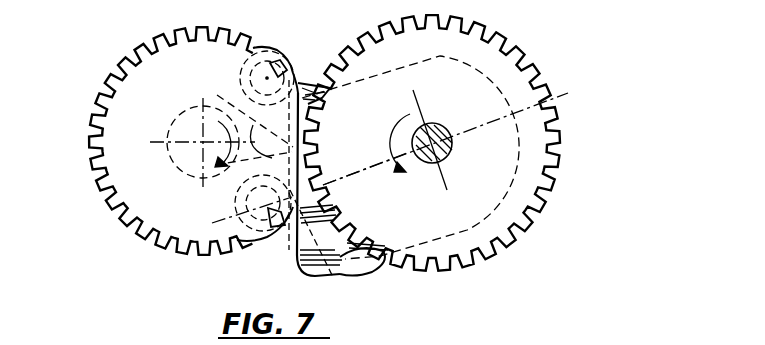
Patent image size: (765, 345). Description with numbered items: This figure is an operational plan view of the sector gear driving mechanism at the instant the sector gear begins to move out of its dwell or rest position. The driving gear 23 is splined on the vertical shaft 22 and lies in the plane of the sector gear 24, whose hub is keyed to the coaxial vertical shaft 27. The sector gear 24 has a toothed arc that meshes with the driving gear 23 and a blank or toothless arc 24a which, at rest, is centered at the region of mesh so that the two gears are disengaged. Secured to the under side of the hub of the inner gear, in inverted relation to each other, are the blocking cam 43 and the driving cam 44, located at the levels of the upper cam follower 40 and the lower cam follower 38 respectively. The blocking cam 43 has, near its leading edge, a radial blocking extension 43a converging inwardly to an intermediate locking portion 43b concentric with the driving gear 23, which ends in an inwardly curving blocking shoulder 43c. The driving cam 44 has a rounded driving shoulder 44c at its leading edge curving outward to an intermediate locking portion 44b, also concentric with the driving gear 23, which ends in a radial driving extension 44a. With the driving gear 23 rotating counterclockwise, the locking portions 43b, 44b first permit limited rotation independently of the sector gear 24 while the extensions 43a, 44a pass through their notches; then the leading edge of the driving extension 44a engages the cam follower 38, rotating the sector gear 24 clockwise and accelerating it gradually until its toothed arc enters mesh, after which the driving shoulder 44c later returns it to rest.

The vertical shaft 22 is at (440, 125).
The driving gear 23 is at (530, 167).
The sector gear 24 is at (90, 164).
The blank or toothless arc 24a is at (300, 163).
The vertical shaft 27 is at (170, 126).
The lower cam follower 38 is at (236, 209).
The upper cam follower 40 is at (284, 57).
The blocking cam 43 is at (295, 248).
The radial blocking extension 43a is at (303, 280).
The intermediate locking portion 43b is at (300, 133).
The blocking shoulder 43c is at (298, 82).
The driving cam 44 is at (229, 181).
The radial driving extension 44a is at (202, 132).
The intermediate locking portion 44b is at (333, 262).
The rounded driving shoulder 44c is at (378, 273).